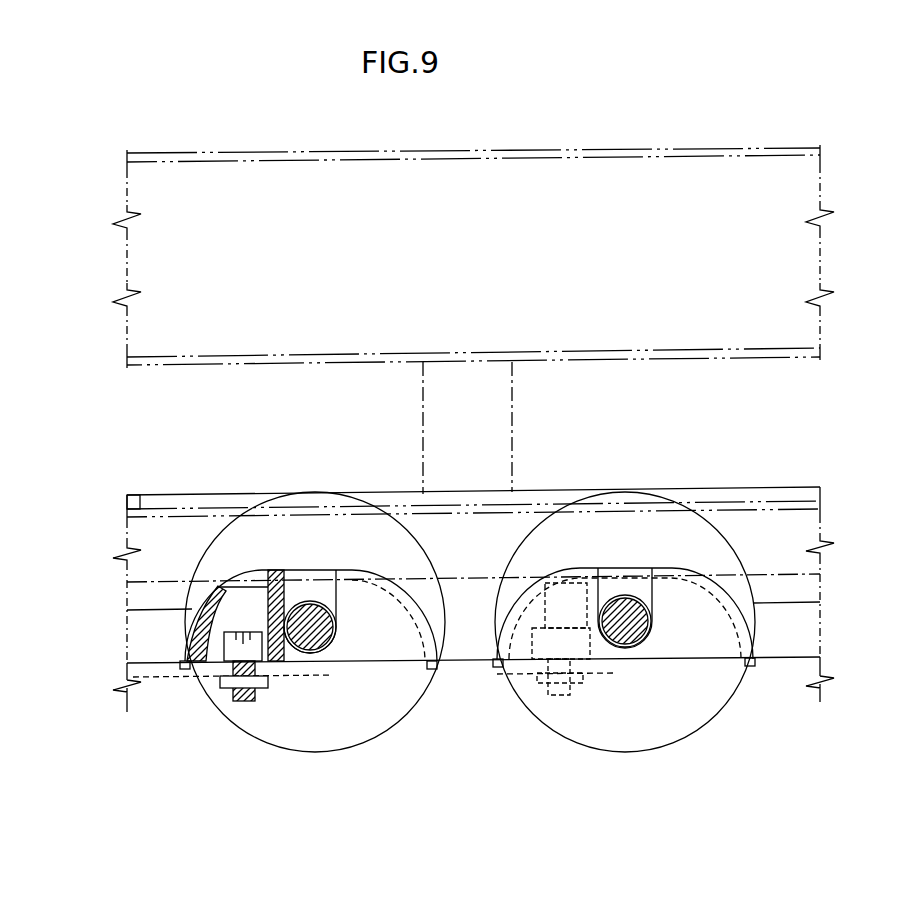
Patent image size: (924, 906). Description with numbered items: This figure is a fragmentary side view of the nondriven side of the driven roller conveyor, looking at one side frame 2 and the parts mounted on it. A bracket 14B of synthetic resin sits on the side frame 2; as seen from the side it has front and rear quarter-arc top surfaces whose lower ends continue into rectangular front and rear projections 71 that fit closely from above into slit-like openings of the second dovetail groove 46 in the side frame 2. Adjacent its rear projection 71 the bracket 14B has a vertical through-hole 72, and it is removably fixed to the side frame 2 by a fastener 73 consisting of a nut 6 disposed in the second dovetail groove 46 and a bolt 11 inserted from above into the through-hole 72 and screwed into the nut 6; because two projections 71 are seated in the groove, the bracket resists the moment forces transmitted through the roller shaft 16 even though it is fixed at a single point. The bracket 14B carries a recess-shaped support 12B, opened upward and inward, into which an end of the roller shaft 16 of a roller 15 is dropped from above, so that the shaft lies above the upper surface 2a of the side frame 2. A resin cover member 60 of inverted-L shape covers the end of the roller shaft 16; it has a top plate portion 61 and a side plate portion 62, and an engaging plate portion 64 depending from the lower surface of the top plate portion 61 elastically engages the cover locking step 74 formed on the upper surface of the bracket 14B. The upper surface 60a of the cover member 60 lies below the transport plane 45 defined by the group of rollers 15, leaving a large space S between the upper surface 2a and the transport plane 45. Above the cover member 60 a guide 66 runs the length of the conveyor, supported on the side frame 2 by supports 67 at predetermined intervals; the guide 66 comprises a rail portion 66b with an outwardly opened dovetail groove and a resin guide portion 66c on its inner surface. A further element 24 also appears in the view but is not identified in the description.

The guide 66 is at (660, 146).
The rail portion 66b is at (758, 148).
The guide portion 66c is at (820, 190).
The support 67 is at (524, 388).
The transport plane 45 is at (477, 491).
The space S is at (462, 561).
The top plate portion 61 is at (528, 511).
The recess-shaped support 12B is at (615, 580).
The roller 15 is at (197, 558).
The cover member 60 is at (783, 503).
The upper surface 60a is at (140, 496).
The cover locking step 74 is at (357, 585).
The bolt 11 is at (227, 630).
The engaging plate portion 64 is at (822, 565).
The side plate portion 62 is at (812, 602).
The upper surface 2a is at (803, 657).
The side frame 2 is at (786, 695).
The second dovetail groove 46 is at (187, 700).
The fastener 73 is at (222, 690).
The vertical through-hole 72 is at (244, 703).
The nut 6 is at (272, 690).
The bracket 14B is at (394, 648).
The projection 71 is at (494, 667).
The hidden clamp bolt 24 is at (530, 708).
The roller shaft 16 is at (620, 655).